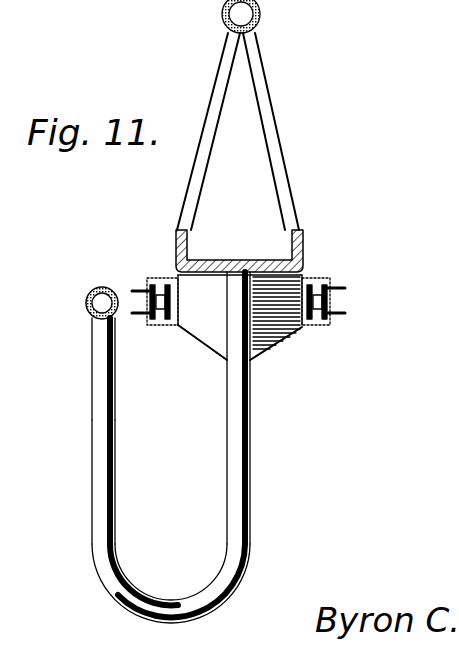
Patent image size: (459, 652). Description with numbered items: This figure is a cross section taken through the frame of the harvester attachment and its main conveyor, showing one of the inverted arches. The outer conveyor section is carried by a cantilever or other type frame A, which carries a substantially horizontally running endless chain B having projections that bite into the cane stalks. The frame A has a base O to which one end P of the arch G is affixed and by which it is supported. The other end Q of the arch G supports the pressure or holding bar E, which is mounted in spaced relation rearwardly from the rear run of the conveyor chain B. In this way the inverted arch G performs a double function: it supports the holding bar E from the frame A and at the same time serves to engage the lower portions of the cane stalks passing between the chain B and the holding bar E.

The frame A is at (282, 135).
The base O is at (255, 262).
The endless chain B is at (333, 292).
The end of arch P is at (252, 284).
The pressure or holding bar E is at (93, 290).
The other end of arch Q is at (92, 318).
The arch G is at (110, 592).